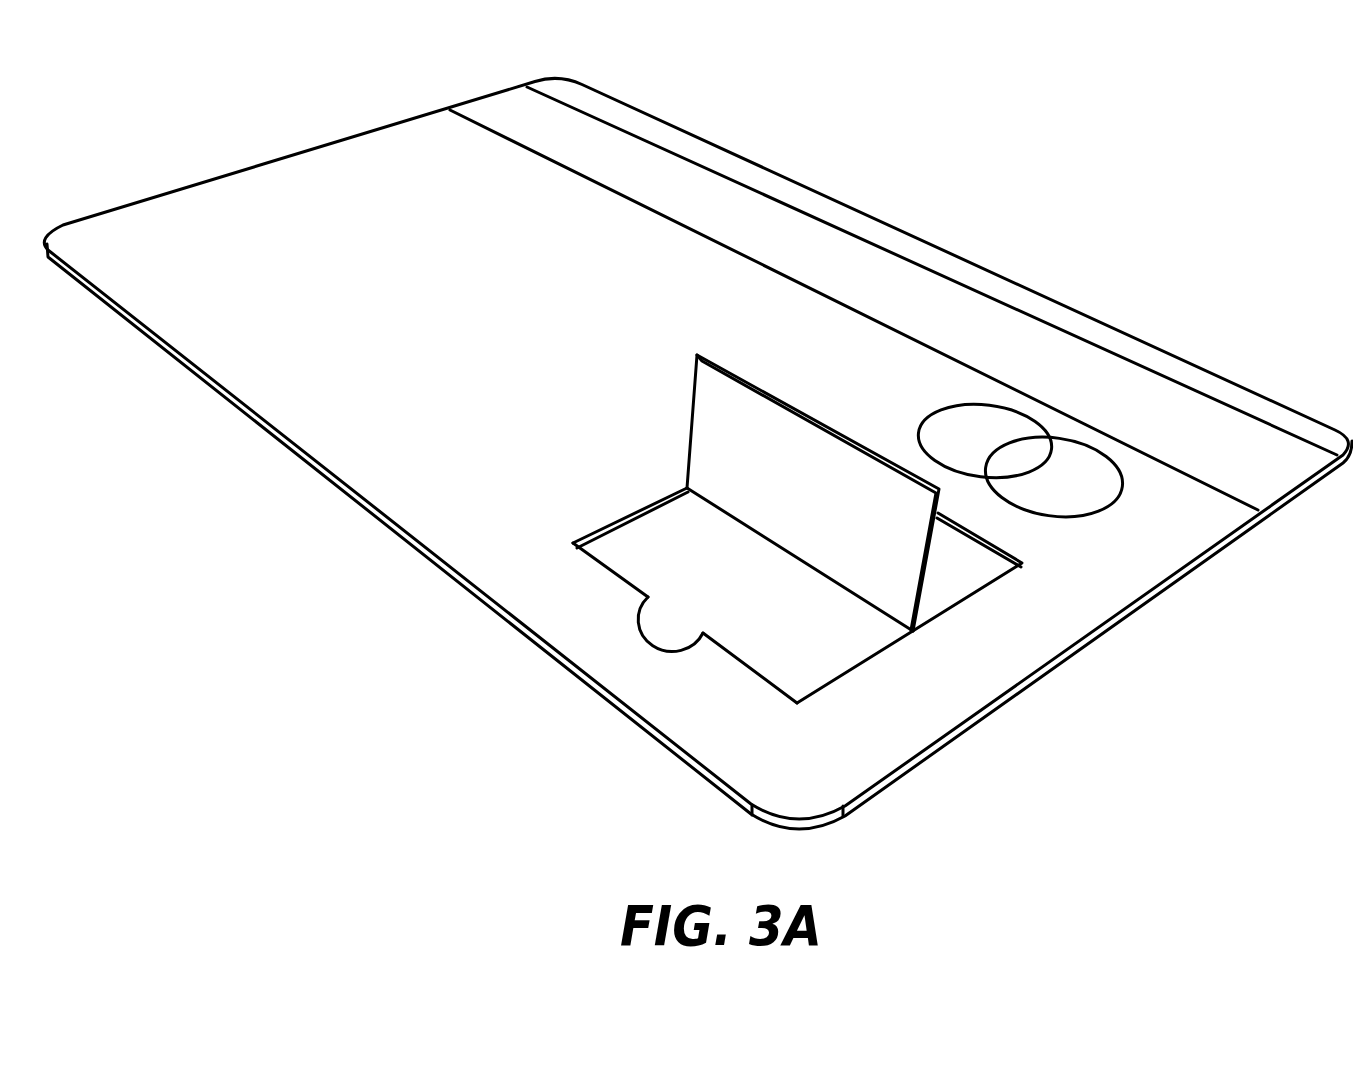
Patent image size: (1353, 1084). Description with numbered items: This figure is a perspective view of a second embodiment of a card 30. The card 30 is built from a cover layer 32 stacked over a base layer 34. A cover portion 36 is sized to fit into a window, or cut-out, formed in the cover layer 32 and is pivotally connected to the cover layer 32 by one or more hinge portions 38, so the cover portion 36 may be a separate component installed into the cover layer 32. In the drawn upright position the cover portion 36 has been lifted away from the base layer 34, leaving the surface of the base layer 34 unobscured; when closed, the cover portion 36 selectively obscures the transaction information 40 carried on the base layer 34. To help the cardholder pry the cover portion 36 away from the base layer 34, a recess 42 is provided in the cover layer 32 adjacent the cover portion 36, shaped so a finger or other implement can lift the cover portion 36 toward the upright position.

The card 30 is at (698, 441).
The cover layer 32 is at (450, 438).
The base layer 34 is at (623, 560).
The cover portion 36 is at (893, 575).
The hinge portion 38 is at (913, 632).
The transaction information 40 is at (649, 598).
The recess 42 is at (643, 632).